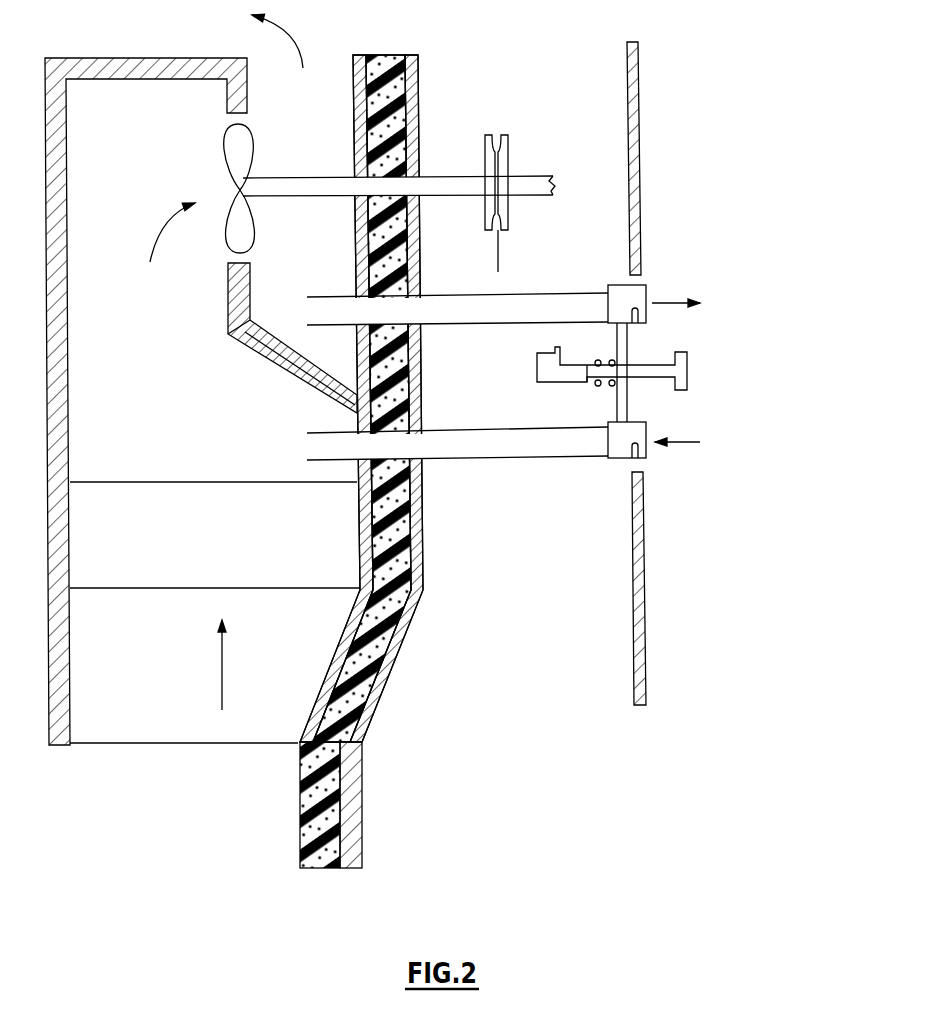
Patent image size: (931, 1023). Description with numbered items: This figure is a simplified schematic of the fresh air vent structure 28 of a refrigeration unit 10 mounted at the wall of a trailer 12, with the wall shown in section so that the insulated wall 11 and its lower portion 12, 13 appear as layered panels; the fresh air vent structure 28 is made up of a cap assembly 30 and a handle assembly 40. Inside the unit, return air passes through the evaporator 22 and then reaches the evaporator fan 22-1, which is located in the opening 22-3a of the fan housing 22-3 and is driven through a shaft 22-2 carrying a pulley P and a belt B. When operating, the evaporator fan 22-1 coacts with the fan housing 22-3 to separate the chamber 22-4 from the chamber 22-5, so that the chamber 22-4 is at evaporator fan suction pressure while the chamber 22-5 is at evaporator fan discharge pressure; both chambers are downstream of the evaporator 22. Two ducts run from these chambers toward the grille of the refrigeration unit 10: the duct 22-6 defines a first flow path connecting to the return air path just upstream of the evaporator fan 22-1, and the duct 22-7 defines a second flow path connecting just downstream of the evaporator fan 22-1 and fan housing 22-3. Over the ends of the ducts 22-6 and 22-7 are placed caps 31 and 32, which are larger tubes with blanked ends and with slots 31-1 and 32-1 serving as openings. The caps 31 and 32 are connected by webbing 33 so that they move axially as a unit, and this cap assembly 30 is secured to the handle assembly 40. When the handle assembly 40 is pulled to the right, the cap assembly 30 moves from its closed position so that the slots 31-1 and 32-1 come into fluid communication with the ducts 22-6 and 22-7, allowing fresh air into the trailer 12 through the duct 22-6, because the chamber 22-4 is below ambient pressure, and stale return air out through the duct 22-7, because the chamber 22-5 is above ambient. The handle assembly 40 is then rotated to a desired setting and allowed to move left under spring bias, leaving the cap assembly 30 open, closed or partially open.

The refrigeration unit 10 is at (645, 592).
The insulated wall 11 is at (383, 648).
The trailer 12 is at (364, 818).
The insulation layer 13 is at (298, 812).
The evaporator 22 is at (183, 590).
The evaporator fan 22-1 is at (226, 158).
The fan shaft 22-2 is at (432, 197).
The fan housing 22-3 is at (226, 99).
The opening 22-3a is at (228, 258).
The chamber 22-4 is at (258, 396).
The chamber 22-5 is at (333, 113).
The duct 22-6 is at (584, 428).
The duct 22-7 is at (556, 293).
The fresh air vent structure 28 is at (745, 357).
The cap assembly 30 is at (657, 423).
The cap 31 is at (647, 452).
The slot 31-1 is at (637, 458).
The cap 32 is at (645, 285).
The slot 32-1 is at (635, 318).
The webbing 33 is at (630, 347).
The handle assembly 40 is at (695, 372).
The pulley P is at (510, 160).
The belt B is at (500, 256).